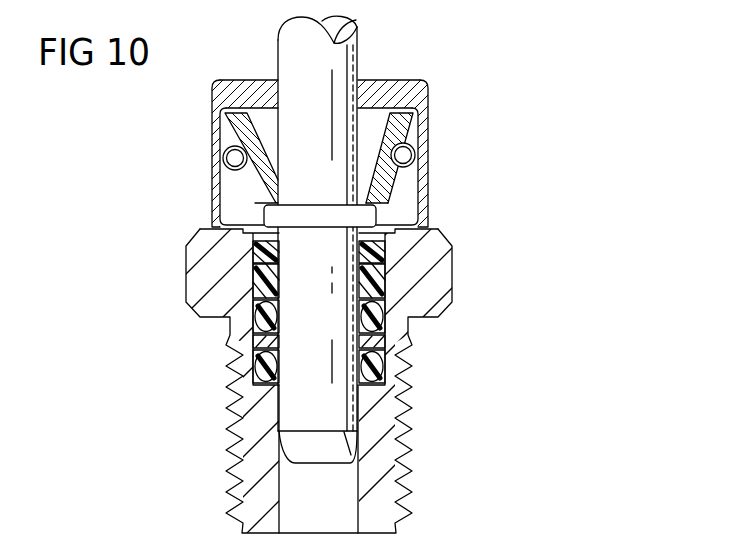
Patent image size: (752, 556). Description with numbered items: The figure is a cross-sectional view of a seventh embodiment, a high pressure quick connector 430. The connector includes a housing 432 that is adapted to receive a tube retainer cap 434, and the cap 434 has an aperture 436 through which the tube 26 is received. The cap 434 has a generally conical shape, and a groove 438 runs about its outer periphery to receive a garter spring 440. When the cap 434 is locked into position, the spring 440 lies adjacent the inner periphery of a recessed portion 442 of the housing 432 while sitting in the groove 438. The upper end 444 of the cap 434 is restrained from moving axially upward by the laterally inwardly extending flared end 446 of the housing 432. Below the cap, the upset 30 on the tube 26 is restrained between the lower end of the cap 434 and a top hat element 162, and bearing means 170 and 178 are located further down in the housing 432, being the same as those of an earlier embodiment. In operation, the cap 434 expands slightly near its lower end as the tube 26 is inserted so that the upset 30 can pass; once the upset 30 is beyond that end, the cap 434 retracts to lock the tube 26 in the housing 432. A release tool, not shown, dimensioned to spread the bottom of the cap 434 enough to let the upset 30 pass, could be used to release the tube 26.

The tube 26 is at (329, 95).
The upset 30 is at (272, 215).
The high pressure quick connector 430 is at (376, 278).
The housing 432 is at (376, 278).
The tube retainer cap 434 is at (229, 91).
The aperture 436 is at (378, 216).
The groove 438 is at (395, 155).
The garter spring 440 is at (427, 177).
The recessed portion 442 is at (214, 171).
The upper end 444 is at (246, 112).
The flared end 446 is at (403, 104).
The top hat element 162 is at (354, 283).
The bearing means 170 is at (389, 293).
The bearing means 178 is at (354, 400).